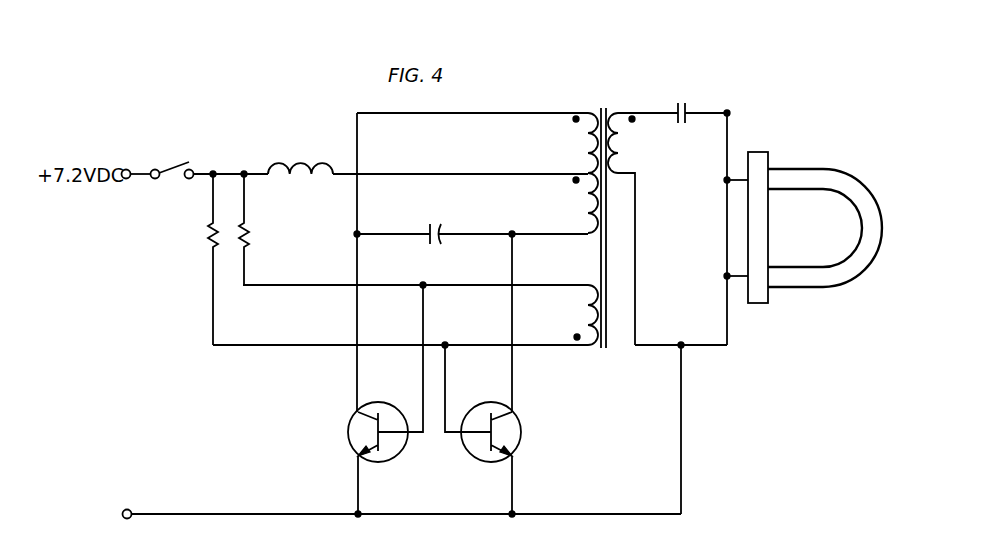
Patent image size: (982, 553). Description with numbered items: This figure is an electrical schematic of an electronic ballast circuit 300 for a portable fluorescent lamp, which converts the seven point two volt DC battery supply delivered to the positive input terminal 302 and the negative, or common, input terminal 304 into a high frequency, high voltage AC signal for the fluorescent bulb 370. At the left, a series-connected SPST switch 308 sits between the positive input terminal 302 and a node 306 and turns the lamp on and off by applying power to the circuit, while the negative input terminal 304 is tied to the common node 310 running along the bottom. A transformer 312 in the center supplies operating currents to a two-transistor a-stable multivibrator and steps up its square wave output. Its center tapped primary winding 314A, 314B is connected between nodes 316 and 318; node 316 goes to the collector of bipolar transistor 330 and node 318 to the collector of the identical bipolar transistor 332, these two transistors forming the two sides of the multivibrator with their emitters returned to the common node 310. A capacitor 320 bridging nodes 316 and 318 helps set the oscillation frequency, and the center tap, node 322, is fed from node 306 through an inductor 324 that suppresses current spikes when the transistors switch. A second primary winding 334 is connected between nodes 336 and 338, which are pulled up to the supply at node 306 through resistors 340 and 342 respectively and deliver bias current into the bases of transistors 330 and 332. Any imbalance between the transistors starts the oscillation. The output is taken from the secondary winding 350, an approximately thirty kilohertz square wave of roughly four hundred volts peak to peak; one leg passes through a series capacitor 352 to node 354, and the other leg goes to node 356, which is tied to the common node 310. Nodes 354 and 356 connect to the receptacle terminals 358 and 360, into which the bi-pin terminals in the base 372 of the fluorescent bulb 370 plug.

The electronic ballast circuit 300 is at (266, 66).
The positive input terminal 302 is at (125, 180).
The negative (common) input terminal 304 is at (125, 508).
The node 306 is at (216, 172).
The SPST switch 308 is at (176, 165).
The common node 310 is at (355, 512).
The transformer 312 is at (603, 108).
The primary winding (first half) 314A is at (585, 131).
The primary winding (second half) 314B is at (588, 201).
The node 316 is at (360, 238).
The node 318 is at (514, 238).
The capacitor 320 is at (430, 225).
The center tap node 322 is at (585, 172).
The inductor 324 is at (309, 157).
The bipolar transistor 330 is at (350, 422).
The bipolar transistor 332 is at (521, 446).
The second primary winding 334 is at (588, 313).
The node 336 is at (427, 289).
The node 338 is at (449, 350).
The resistor 340 is at (250, 227).
The resistor 342 is at (208, 233).
The secondary winding 350 is at (622, 152).
The series capacitor 352 is at (683, 104).
The node 354 is at (729, 110).
The node 356 is at (684, 350).
The receptacle terminal 358 is at (727, 184).
The receptacle terminal 360 is at (727, 275).
The fluorescent bulb 370 is at (806, 169).
The base 372 is at (760, 306).